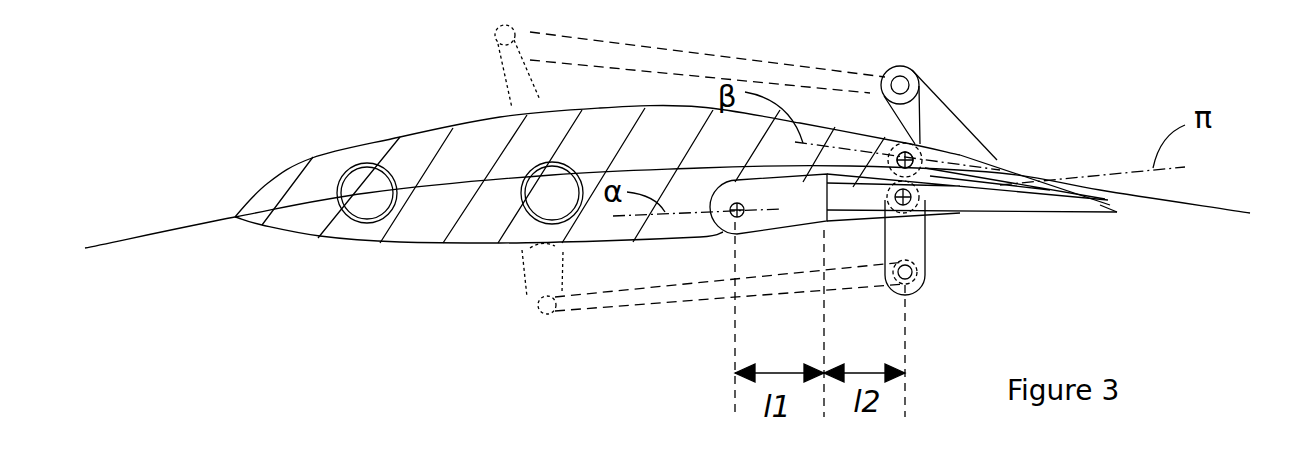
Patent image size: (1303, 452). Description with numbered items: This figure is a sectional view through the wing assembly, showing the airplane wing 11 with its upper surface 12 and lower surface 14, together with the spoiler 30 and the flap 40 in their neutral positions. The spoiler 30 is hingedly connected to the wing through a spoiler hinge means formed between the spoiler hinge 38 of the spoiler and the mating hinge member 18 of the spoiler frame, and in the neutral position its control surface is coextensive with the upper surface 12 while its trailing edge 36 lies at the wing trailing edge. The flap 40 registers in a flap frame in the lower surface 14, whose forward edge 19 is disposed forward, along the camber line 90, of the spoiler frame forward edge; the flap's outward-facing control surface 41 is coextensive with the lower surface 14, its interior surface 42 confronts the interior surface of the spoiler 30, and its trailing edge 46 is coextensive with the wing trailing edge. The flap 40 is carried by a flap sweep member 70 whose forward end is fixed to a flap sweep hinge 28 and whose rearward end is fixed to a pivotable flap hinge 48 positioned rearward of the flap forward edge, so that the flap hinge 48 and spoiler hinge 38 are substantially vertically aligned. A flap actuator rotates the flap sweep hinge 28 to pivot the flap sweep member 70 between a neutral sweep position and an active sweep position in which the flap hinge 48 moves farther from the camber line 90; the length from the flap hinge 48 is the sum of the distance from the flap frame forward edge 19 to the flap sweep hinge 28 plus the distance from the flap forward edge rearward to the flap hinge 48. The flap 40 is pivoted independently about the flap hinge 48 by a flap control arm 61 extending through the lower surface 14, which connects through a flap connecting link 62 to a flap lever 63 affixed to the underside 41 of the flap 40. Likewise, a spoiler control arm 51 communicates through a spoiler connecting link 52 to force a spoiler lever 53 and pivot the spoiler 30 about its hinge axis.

The airplane wing 11 is at (589, 189).
The upper surface 12 is at (482, 118).
The lower surface 14 is at (455, 252).
The spoiler hinge 18 is at (917, 145).
The spoiler hinge 38 is at (905, 160).
The forward edge of the flap frame 19 is at (827, 193).
The flap sweep hinge 28 is at (733, 218).
The spoiler 30 is at (1050, 137).
The trailing edge of the spoiler 36 is at (1108, 200).
The flap 40 is at (1004, 202).
The control surface of the flap 41 is at (982, 208).
The interior surface of the flap 42 is at (1052, 200).
The trailing edge of the flap 46 is at (1112, 212).
The flap hinge 48 is at (917, 225).
The spoiler control arm 51 is at (522, 88).
The spoiler connecting link 52 is at (680, 53).
The spoiler lever 53 is at (920, 108).
The flap control arm 61 is at (527, 305).
The flap connecting link 62 is at (657, 313).
The flap lever 63 is at (913, 255).
The flap sweep member 70 is at (817, 200).
The camber line 90 is at (1210, 208).